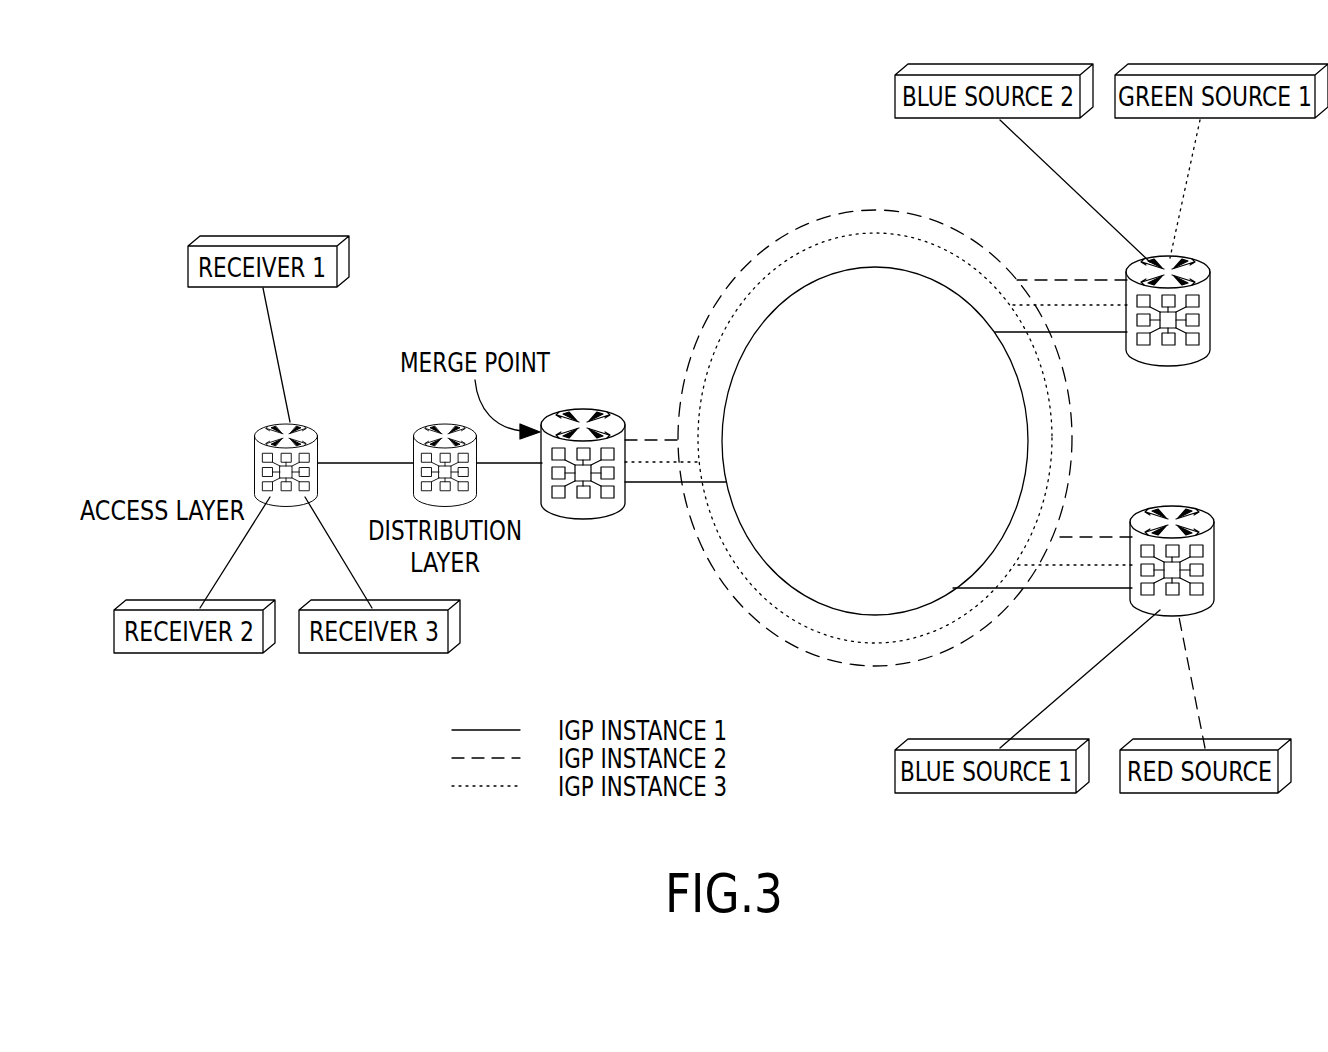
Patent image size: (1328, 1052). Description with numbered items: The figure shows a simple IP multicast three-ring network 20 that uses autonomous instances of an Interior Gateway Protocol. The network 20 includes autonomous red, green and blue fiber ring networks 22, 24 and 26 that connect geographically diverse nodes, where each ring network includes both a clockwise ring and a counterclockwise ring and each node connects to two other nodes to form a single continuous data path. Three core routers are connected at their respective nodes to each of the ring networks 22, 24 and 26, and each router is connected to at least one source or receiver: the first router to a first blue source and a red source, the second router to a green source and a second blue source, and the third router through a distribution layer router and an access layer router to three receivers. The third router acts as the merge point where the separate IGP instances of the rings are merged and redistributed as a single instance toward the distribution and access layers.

The IP multicast three-ring network 20 is at (630, 213).
The red fiber ring network 22 is at (798, 230).
The green fiber ring network 24 is at (769, 279).
The blue fiber ring network 26 is at (770, 336).